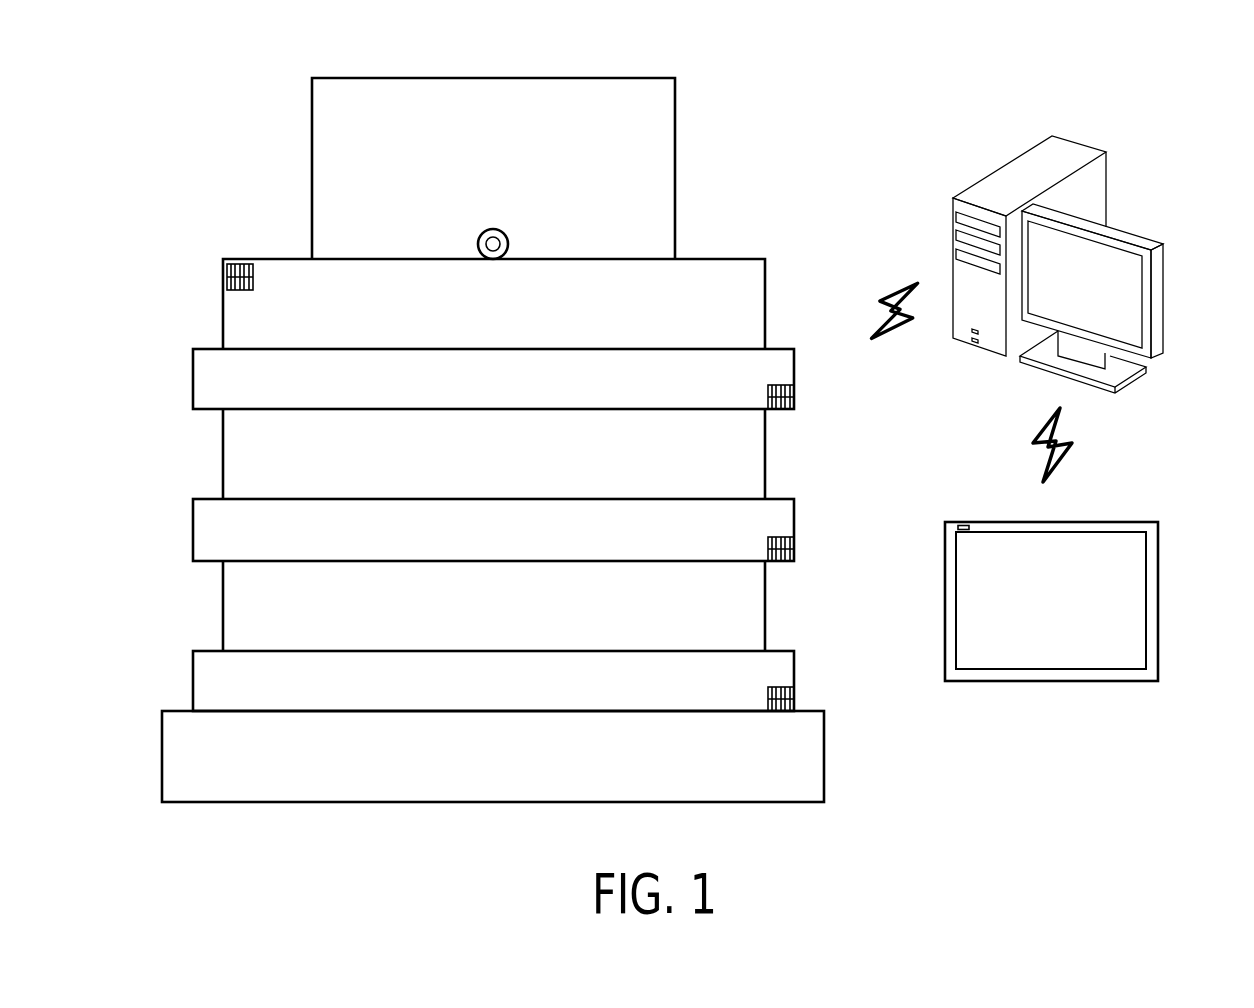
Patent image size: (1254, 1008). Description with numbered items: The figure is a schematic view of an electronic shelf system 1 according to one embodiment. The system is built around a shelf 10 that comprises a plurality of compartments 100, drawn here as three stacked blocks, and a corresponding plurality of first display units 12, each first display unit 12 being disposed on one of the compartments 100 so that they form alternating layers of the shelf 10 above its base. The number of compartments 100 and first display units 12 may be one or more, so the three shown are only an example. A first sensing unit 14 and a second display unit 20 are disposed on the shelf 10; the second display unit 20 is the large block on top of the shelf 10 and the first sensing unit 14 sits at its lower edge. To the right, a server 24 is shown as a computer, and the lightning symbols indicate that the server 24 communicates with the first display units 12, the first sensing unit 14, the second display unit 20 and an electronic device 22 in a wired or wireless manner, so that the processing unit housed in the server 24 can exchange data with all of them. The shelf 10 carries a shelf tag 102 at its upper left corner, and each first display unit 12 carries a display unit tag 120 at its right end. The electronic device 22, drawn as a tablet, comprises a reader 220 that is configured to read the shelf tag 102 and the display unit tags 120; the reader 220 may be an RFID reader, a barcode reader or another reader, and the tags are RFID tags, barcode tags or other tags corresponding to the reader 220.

The electronic shelf system 1 is at (805, 78).
The shelf 10 is at (266, 257).
The compartment 100 is at (738, 324).
The shelf tag 102 is at (225, 278).
The first display unit 12 is at (193, 378).
The display unit tag 120 is at (780, 397).
The first sensing unit 14 is at (505, 233).
The second display unit 20 is at (493, 78).
The electronic device 22 is at (1158, 595).
The reader 220 is at (964, 524).
The server 24 is at (1078, 142).